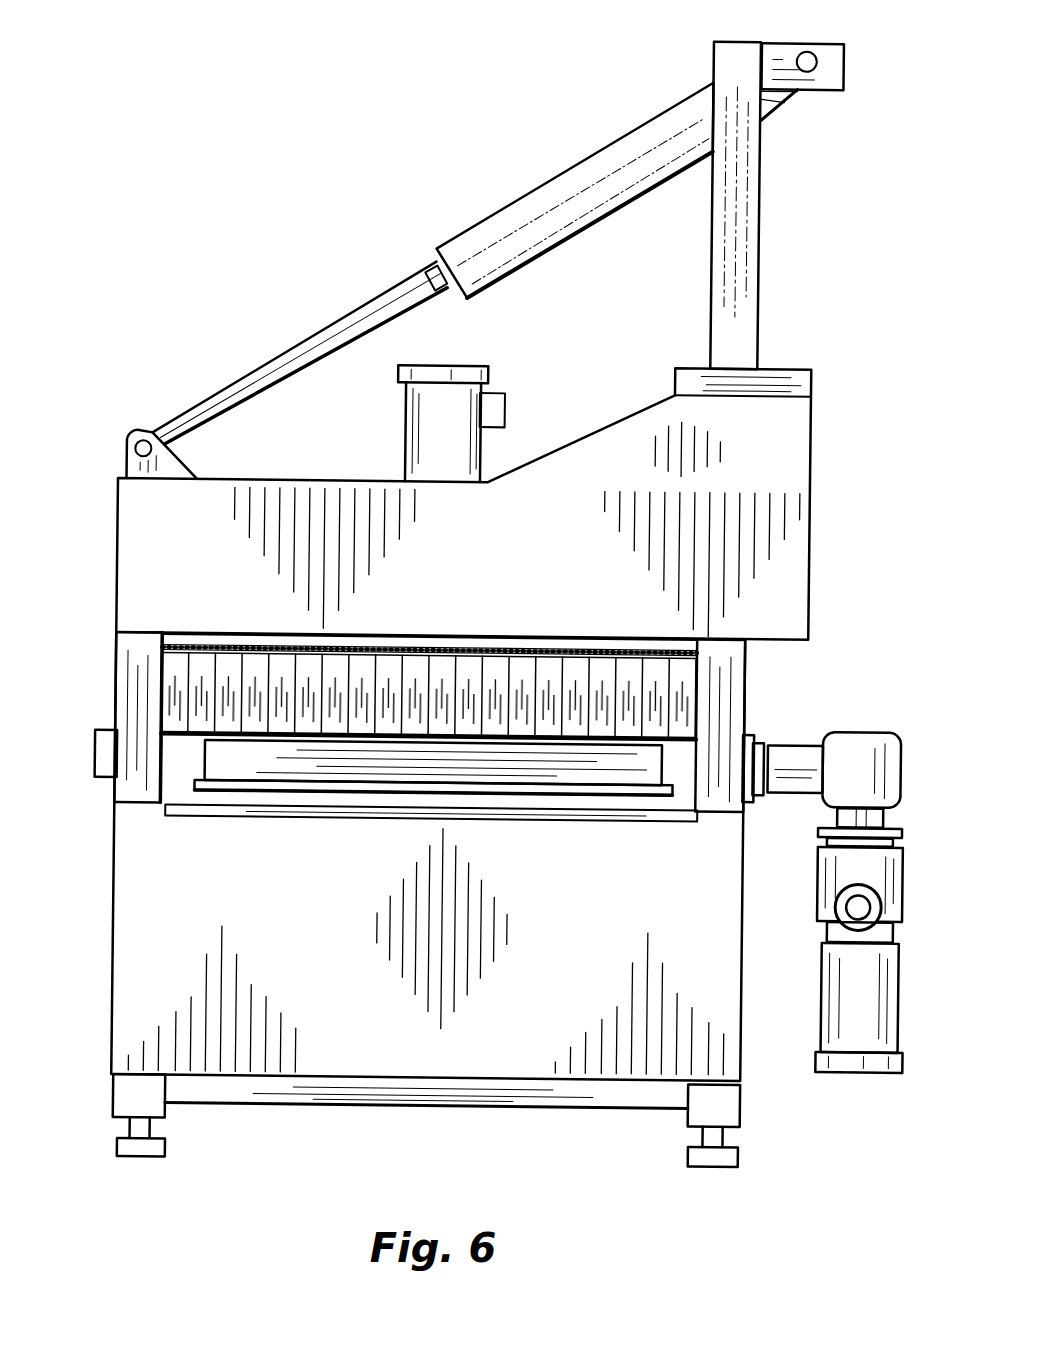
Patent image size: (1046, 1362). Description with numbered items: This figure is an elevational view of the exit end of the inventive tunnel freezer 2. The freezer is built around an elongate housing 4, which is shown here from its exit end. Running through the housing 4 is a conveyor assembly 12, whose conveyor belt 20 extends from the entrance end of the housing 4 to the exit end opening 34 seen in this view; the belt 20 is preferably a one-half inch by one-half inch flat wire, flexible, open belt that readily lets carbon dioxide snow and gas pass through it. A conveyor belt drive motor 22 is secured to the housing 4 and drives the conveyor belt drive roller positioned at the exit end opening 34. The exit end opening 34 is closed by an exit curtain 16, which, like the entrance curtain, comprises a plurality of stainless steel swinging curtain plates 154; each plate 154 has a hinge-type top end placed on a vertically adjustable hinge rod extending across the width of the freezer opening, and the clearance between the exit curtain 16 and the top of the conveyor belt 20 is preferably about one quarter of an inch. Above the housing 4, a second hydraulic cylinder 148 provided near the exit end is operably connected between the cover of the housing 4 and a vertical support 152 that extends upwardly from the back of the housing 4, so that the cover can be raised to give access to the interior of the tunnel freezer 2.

The tunnel freezer 2 is at (340, 174).
The housing 4 is at (160, 518).
The conveyor assembly 12 is at (208, 759).
The exit curtain 16 is at (195, 667).
The conveyor belt 20 is at (208, 759).
The conveyor belt drive motor 22 is at (854, 1010).
The exit end opening 34 is at (675, 747).
The second hydraulic cylinder 148 is at (610, 166).
The vertical support 152 is at (737, 226).
The swinging curtain plates 154 is at (572, 660).